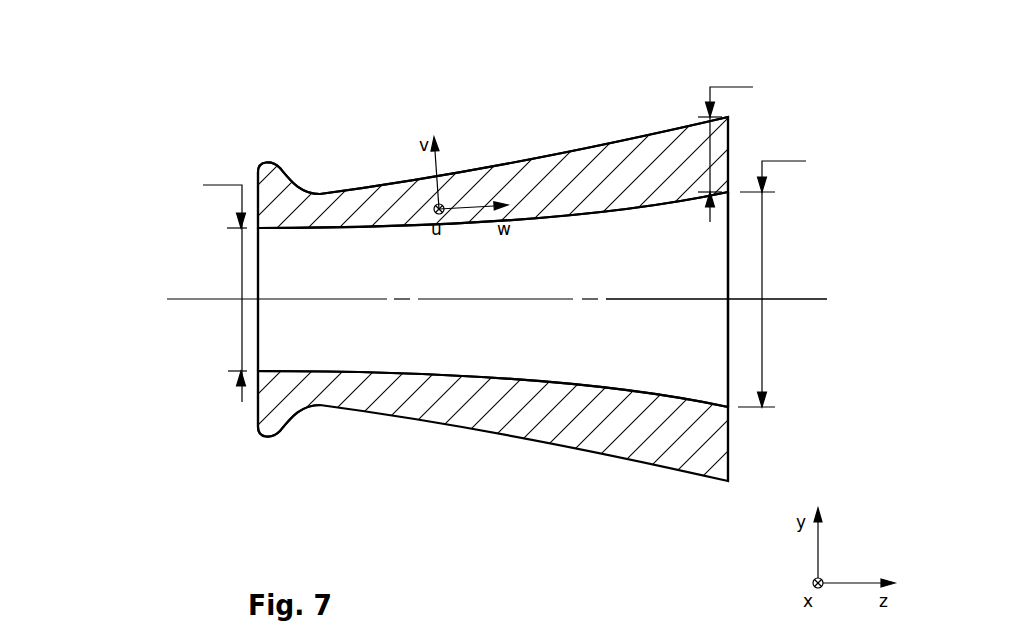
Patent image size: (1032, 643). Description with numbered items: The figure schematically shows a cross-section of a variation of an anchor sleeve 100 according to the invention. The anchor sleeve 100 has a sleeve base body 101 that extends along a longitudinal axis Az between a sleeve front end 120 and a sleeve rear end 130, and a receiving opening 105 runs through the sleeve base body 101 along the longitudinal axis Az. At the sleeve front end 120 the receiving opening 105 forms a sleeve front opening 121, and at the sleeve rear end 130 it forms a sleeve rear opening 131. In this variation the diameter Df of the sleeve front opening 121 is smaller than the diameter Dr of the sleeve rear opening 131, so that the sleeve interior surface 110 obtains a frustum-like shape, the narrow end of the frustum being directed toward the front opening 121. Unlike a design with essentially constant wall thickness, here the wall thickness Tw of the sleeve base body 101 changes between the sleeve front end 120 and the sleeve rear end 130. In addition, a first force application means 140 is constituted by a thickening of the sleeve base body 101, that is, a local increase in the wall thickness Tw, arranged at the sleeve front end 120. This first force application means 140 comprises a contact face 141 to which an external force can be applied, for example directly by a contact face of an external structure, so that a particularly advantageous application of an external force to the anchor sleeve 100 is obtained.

The anchor sleeve 100 is at (449, 264).
The sleeve base body 101 is at (490, 306).
The receiving opening 105 is at (383, 299).
The sleeve interior surface 110 is at (545, 132).
The sleeve front end 120 is at (148, 346).
The sleeve front opening 121 is at (148, 237).
The sleeve rear end 130 is at (819, 299).
The sleeve rear opening 131 is at (819, 299).
The first force application means 140 is at (231, 124).
The contact face 141 is at (179, 440).
The longitudinal axis Az is at (753, 251).
The diameter of the sleeve front opening Df is at (225, 280).
The diameter of the sleeve rear opening Dr is at (772, 270).
The wall thickness Tw is at (725, 140).